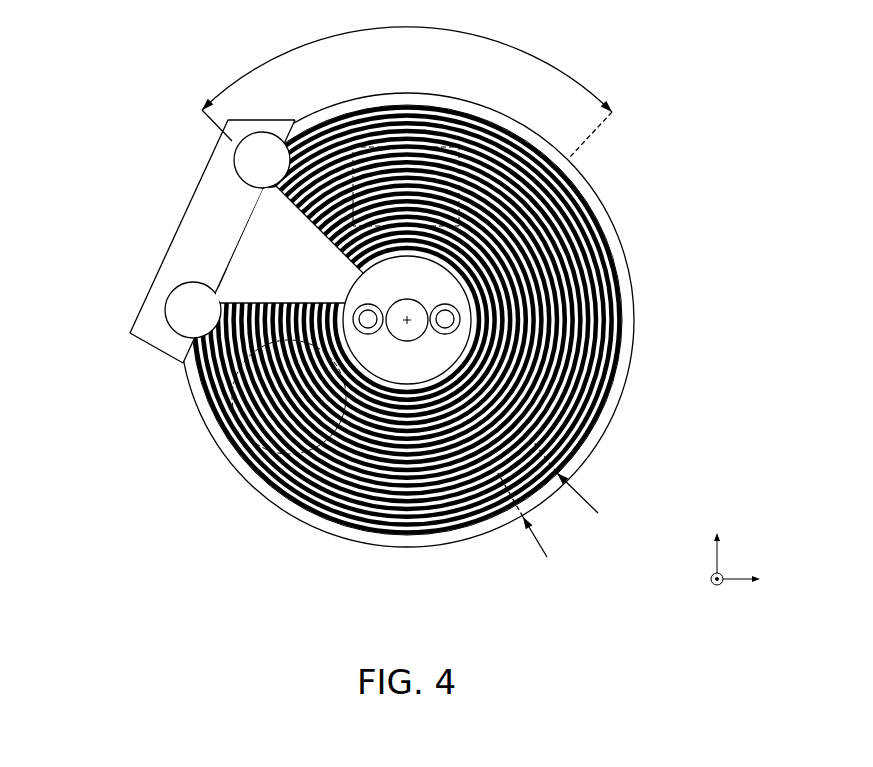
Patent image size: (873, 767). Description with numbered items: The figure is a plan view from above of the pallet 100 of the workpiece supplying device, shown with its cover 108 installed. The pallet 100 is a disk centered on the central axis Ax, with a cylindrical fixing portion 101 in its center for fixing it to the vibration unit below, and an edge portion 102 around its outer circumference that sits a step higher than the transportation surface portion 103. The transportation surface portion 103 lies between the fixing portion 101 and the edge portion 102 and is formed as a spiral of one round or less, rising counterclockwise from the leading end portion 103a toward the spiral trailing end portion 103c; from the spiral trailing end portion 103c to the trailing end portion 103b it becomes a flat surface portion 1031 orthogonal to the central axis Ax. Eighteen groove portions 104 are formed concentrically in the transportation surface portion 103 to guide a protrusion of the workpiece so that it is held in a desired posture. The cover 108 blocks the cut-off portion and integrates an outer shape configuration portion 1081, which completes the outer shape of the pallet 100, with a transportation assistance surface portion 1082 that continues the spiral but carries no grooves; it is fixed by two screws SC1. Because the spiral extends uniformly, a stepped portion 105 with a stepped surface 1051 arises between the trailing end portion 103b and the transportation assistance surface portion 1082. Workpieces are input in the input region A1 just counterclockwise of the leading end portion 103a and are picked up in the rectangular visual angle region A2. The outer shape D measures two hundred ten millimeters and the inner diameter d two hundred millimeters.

The pallet 100 is at (768, 31).
The fixing portion 101 is at (465, 282).
The edge portion 102 is at (628, 292).
The transportation surface portion 103 is at (580, 333).
The leading end portion 103a is at (249, 300).
The trailing end portion 103b is at (288, 213).
The spiral trailing end portion 103c is at (453, 293).
The flat surface portion 1031 is at (450, 128).
The groove portion 104 is at (553, 377).
The stepped portion 105 is at (302, 303).
The cover 108 is at (173, 258).
The outer shape configuration portion 1081 is at (197, 270).
The transportation assistance surface portion 1082 is at (270, 250).
The stepped surface 1051 is at (307, 268).
The screw SC1 is at (270, 183).
The input region A1 is at (245, 433).
The visual angle region A2 is at (390, 147).
The central axis Ax is at (407, 320).
The outer shape D is at (529, 524).
The inner diameter d is at (570, 485).